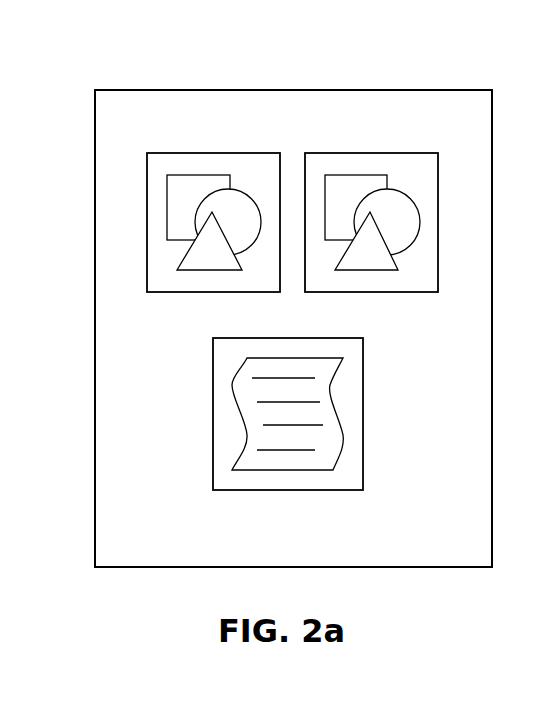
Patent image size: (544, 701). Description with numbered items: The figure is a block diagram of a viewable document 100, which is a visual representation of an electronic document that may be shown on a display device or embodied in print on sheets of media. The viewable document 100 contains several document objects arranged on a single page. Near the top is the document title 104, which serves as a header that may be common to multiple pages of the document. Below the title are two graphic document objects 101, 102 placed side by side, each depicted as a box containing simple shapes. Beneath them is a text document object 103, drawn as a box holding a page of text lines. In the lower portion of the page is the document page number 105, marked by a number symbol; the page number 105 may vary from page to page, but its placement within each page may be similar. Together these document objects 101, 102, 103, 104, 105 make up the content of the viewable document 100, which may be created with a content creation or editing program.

The viewable document 100 is at (135, 86).
The document object 101 is at (147, 292).
The document object 102 is at (405, 292).
The document object 103 is at (213, 470).
The document title 104 is at (325, 108).
The document page number 105 is at (310, 543).